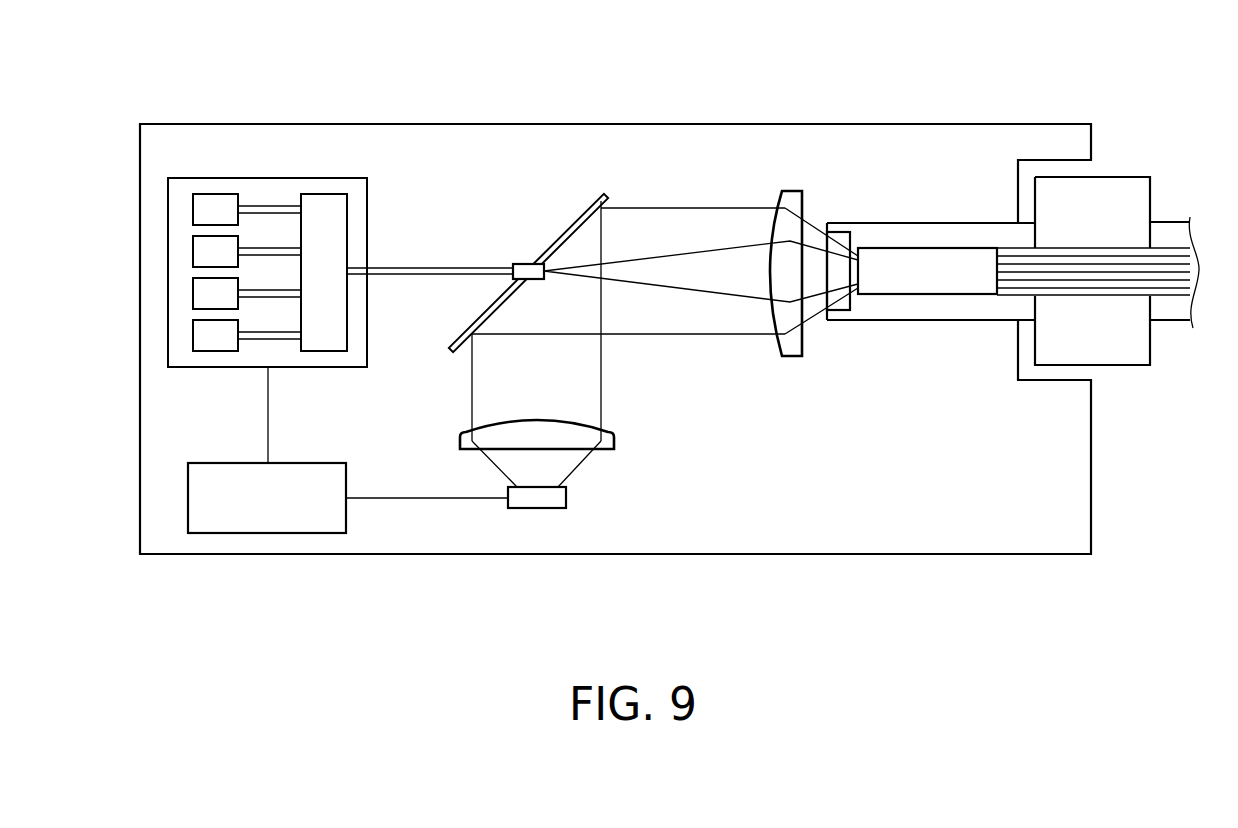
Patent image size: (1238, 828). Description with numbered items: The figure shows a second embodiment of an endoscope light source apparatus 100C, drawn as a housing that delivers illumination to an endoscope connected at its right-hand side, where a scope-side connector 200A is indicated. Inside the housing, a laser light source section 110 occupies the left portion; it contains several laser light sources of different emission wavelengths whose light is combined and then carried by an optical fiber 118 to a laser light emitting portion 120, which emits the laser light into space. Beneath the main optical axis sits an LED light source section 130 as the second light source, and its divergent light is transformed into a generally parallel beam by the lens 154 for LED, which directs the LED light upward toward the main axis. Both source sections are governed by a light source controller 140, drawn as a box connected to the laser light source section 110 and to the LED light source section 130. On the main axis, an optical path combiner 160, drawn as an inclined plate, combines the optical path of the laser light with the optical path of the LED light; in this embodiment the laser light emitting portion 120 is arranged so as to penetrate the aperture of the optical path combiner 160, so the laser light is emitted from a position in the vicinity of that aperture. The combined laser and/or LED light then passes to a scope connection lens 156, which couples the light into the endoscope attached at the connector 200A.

The endoscope light source apparatus 100C is at (712, 106).
The laser light source section 110 is at (270, 178).
The optical fiber 118 is at (433, 268).
The laser light emitting portion 120 is at (525, 264).
The optical path combiner 160 is at (586, 212).
The scope connection lens 156 is at (793, 190).
The lens for LED 154 is at (606, 449).
The LED light source section 130 is at (537, 508).
The light source controller 140 is at (268, 533).
The light guide 200A is at (1162, 164).